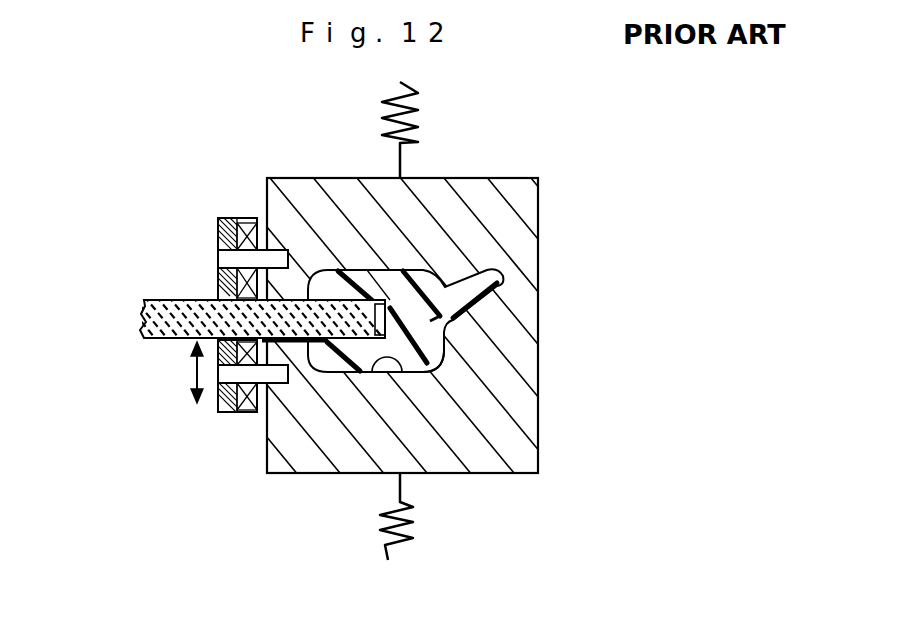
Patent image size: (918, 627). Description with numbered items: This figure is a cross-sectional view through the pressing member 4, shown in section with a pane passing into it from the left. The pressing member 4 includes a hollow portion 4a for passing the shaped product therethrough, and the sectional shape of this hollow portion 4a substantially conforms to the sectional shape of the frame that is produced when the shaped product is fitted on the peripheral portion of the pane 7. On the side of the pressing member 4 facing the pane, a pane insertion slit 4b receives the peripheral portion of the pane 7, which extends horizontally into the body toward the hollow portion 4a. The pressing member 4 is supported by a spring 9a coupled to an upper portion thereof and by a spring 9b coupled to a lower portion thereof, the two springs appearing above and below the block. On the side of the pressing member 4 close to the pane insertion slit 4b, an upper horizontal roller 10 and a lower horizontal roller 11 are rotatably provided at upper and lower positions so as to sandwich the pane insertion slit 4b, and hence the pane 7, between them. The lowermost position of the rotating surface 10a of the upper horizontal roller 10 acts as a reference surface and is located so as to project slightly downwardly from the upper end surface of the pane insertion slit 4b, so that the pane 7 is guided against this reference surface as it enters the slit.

The pressing member 4 is at (553, 200).
The hollow portion 4a is at (427, 370).
The pane insertion slit 4b is at (327, 360).
The pane 7 is at (140, 298).
The spring 9a is at (418, 120).
The spring 9b is at (412, 535).
The upper horizontal roller 10 is at (218, 218).
The rotating surface 10a is at (195, 300).
The lower horizontal roller 11 is at (216, 413).